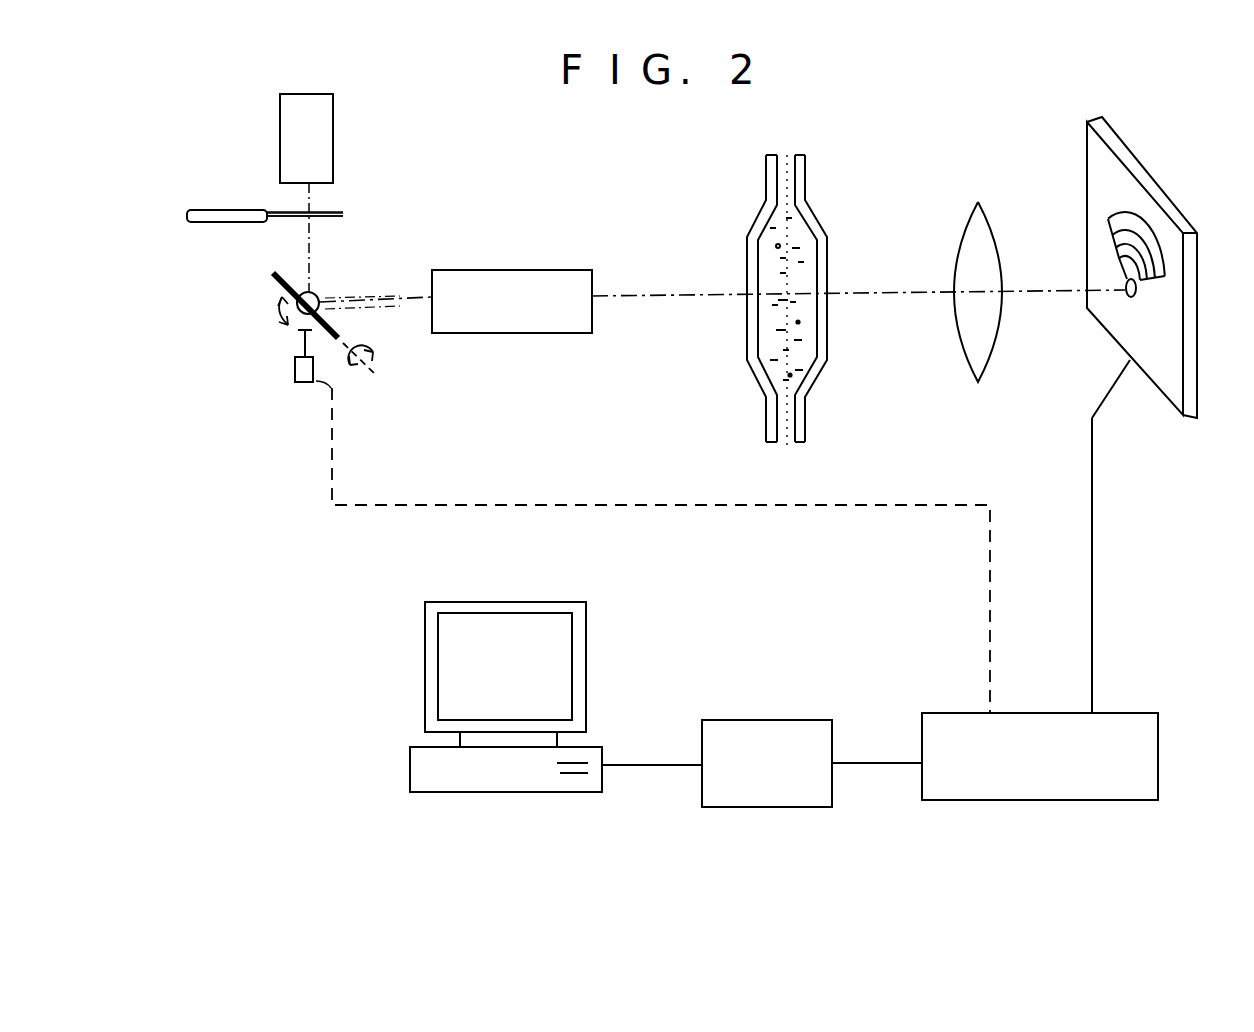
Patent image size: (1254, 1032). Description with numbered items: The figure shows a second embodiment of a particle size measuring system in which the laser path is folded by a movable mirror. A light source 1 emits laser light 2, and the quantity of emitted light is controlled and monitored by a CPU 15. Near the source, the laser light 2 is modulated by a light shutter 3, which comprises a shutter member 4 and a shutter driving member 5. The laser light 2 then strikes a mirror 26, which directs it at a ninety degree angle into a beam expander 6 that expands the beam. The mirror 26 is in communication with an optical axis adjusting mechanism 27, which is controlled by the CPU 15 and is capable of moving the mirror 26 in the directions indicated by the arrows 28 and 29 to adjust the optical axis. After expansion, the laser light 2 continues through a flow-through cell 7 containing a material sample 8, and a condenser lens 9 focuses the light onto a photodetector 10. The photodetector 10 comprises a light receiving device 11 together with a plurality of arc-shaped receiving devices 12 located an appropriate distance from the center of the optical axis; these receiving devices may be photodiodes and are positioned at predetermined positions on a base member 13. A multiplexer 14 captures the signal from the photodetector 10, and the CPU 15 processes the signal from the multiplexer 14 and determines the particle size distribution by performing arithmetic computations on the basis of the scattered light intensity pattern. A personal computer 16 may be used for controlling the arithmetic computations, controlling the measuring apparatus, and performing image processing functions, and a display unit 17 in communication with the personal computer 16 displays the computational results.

The light source 1 is at (280, 133).
The laser light 2 is at (330, 210).
The light shutter 3 is at (227, 271).
The shutter member 4 is at (292, 218).
The shutter driving member 5 is at (215, 229).
The beam expander 6 is at (497, 270).
The flow-through cell 7 is at (752, 230).
The material sample 8 is at (800, 236).
The condenser lens 9 is at (962, 232).
The photodetector 10 is at (1052, 186).
The light receiving device 11 is at (1125, 284).
The arc-shaped receiving devices 12 is at (1092, 227).
The base member 13 is at (1103, 176).
The multiplexer 14 is at (1020, 800).
The CPU 15 is at (775, 807).
The personal computer 16 is at (410, 760).
The display unit 17 is at (425, 640).
The mirror 26 is at (274, 278).
The optical axis adjusting mechanism 27 is at (297, 380).
The arrow 28 is at (277, 312).
The arrow 29 is at (364, 368).